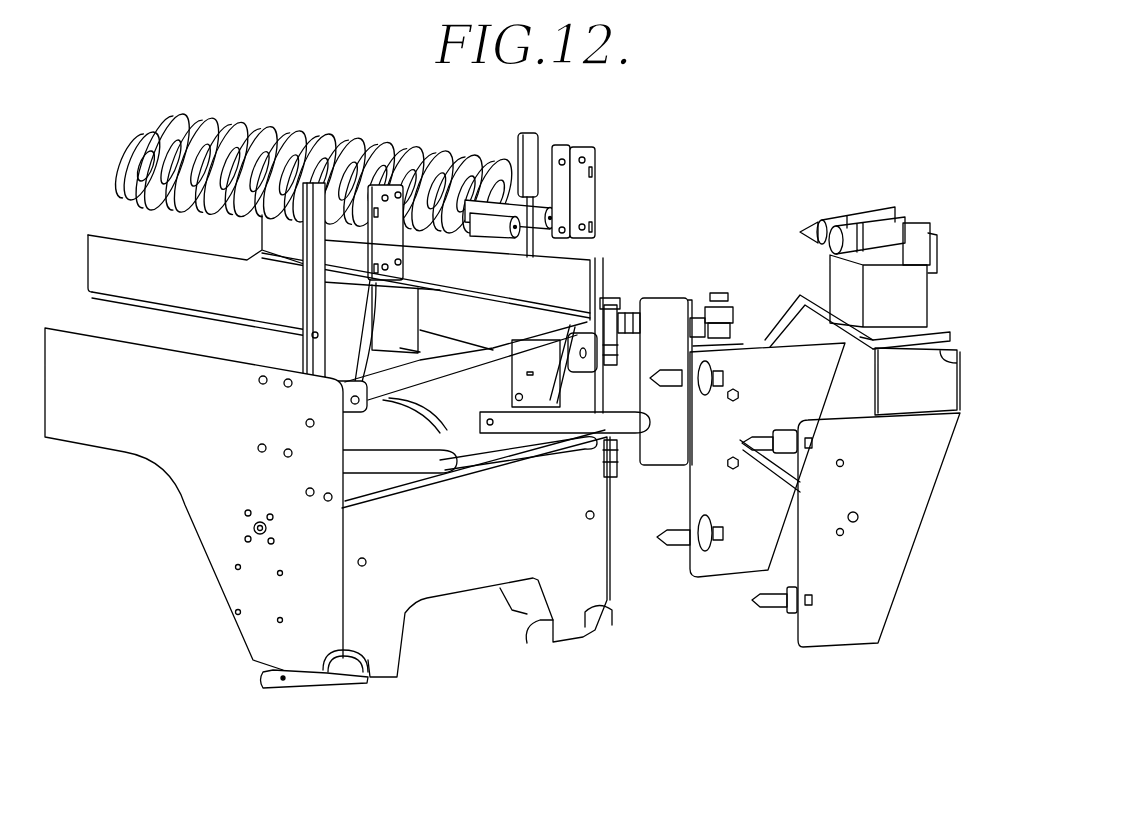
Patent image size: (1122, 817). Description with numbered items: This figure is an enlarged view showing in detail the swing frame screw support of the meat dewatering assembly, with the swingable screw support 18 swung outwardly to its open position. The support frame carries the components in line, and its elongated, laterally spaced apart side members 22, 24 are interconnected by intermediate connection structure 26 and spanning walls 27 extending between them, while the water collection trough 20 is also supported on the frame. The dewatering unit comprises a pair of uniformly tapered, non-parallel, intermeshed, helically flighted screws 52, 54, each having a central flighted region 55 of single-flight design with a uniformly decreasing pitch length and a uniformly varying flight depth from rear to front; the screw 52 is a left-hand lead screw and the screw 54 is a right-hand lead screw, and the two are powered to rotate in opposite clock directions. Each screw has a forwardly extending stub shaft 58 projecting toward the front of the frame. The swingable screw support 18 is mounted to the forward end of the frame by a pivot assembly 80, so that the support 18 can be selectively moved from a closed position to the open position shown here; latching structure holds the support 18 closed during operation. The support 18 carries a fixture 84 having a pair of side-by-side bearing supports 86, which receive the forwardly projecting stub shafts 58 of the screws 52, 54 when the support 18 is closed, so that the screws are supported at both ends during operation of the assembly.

The swingable screw support 18 is at (745, 663).
The water collection trough 20 is at (88, 227).
The side member 22 is at (440, 434).
The side member 24 is at (195, 482).
The intermediate connection structure 26 is at (437, 380).
The spanning wall 27 is at (476, 577).
The helically flighted screw 52 is at (248, 103).
The helically flighted screw 54 is at (140, 128).
The central flighted region 55 is at (397, 152).
The stub shaft 58 is at (520, 198).
The pivot assembly 80 is at (706, 280).
The fixture 84 is at (838, 272).
The bearing support 86 is at (882, 225).